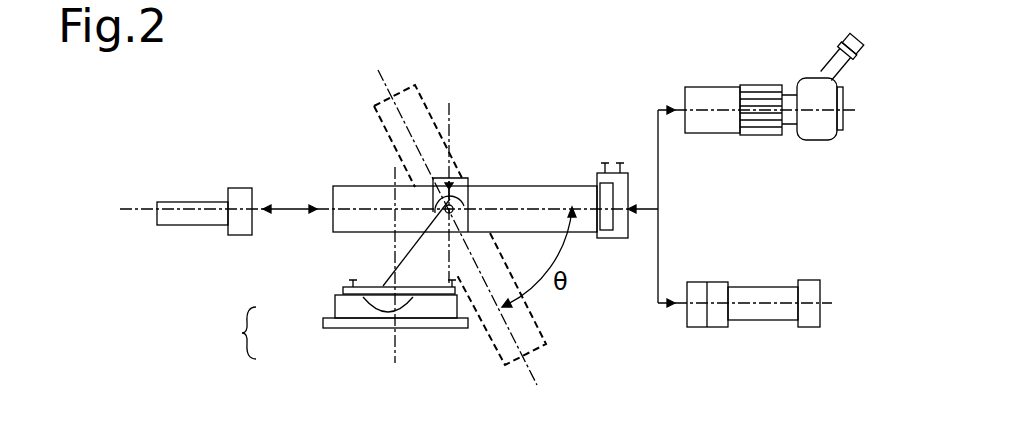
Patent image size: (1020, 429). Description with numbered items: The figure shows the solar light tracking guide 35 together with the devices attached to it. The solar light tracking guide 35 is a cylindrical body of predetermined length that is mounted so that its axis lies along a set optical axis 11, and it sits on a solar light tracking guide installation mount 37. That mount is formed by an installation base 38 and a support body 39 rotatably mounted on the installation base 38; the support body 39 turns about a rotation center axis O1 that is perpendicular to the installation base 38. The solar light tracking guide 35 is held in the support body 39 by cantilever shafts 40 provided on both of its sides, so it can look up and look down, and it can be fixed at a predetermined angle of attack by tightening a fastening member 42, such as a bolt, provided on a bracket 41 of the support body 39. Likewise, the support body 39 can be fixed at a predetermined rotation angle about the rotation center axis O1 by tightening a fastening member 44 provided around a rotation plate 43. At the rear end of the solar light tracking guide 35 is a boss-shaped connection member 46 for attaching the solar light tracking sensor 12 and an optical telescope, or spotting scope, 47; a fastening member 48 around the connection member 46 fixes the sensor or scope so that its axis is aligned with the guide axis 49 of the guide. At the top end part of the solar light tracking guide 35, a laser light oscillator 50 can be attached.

The set optical axis 11 is at (131, 212).
The solar light tracking sensor 12 is at (750, 322).
The solar light tracking guide 35 is at (347, 188).
The solar light tracking guide installation mount 37 is at (228, 333).
The installation base 38 is at (324, 320).
The support body 39 is at (336, 294).
The cantilever shafts 40 is at (470, 205).
The bracket 41 is at (417, 251).
The fastening member 42 is at (452, 191).
The rotation plate 43 is at (436, 294).
The fastening member 44 is at (350, 280).
The connection member 46 is at (617, 239).
The optical telescope (spotting scope) 47 is at (713, 92).
The fastening member 48 is at (620, 161).
The guide axis 49 is at (377, 208).
The laser light oscillator 50 is at (203, 201).
The rotation center axis O1 is at (388, 344).